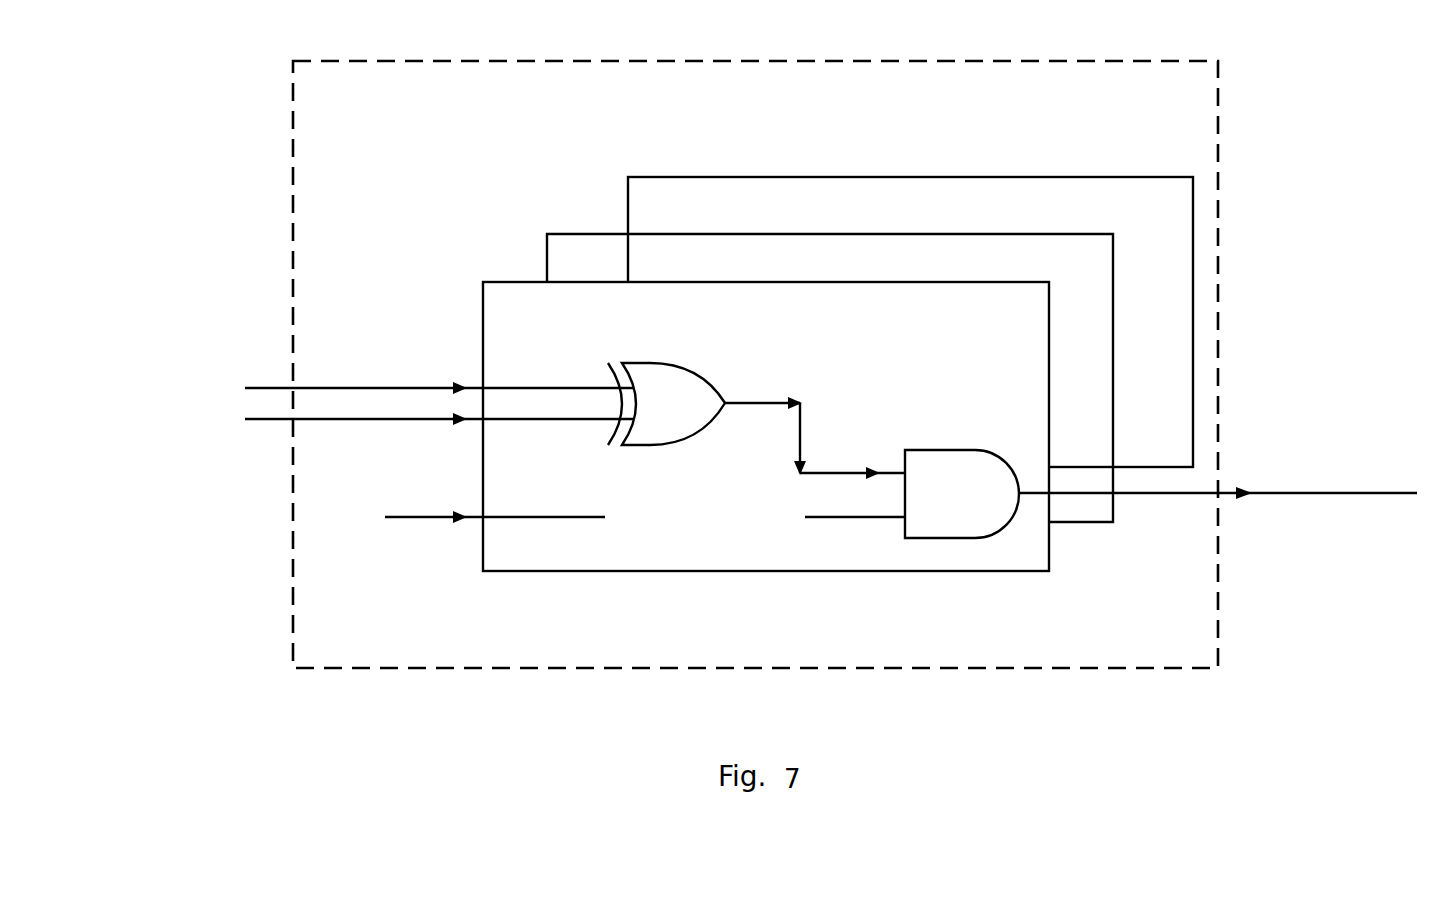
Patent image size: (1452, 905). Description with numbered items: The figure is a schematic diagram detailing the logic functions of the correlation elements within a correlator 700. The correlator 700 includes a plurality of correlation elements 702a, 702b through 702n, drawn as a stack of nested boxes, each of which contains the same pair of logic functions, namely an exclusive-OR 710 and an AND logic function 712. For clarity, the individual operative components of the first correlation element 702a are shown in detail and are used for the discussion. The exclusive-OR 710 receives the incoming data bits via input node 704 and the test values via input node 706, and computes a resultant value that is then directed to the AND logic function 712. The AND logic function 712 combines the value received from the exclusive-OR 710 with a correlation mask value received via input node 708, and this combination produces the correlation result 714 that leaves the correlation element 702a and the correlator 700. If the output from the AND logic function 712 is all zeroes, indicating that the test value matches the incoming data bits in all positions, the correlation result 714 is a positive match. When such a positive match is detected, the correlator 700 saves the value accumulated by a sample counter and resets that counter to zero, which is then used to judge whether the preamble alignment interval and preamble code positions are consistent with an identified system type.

The correlator 700 is at (288, 56).
The correlation element 702a is at (716, 394).
The correlation element 702b is at (771, 337).
The correlation element 702n is at (876, 280).
The input node 704 is at (399, 353).
The input node 706 is at (392, 440).
The input node 708 is at (605, 560).
The exclusive-OR 710 is at (730, 395).
The AND logic function 712 is at (938, 466).
The correlation result 714 is at (1218, 532).